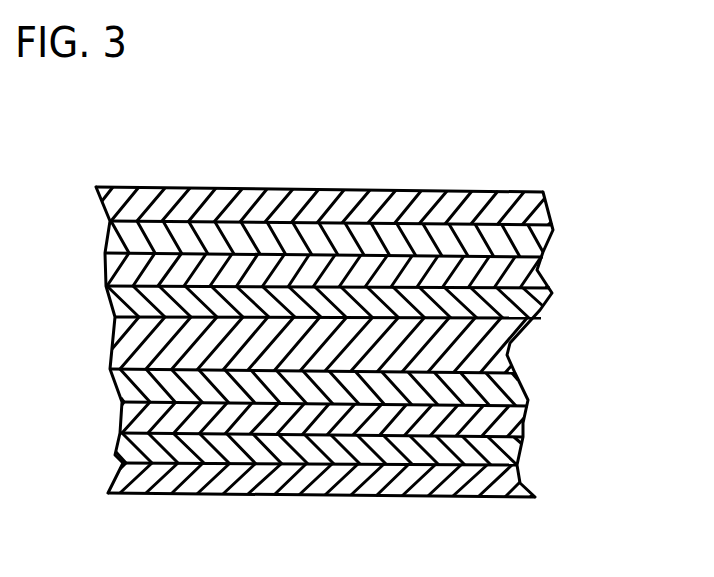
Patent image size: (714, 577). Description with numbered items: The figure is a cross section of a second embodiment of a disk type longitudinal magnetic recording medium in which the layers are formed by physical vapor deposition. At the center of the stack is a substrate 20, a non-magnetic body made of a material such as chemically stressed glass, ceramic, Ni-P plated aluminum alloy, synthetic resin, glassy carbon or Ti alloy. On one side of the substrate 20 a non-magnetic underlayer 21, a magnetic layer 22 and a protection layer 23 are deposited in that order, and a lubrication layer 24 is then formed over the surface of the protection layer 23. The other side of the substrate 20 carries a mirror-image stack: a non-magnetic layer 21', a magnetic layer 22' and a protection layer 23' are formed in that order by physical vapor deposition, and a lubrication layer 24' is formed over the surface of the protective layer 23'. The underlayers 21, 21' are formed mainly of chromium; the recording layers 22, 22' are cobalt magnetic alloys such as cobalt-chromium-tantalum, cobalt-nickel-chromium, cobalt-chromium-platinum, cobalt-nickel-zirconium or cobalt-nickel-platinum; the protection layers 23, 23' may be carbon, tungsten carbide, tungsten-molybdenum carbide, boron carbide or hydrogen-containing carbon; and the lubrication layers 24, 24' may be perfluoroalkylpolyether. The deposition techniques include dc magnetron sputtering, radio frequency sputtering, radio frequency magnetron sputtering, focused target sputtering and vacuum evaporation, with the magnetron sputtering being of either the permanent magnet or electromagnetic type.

The substrate 20 is at (507, 348).
The non-magnetic underlayer 21 is at (380, 293).
The magnetic layer 22 is at (380, 248).
The protection layer 23 is at (368, 202).
The lubrication layer 24 is at (324, 162).
The non-magnetic layer 21' is at (389, 390).
The magnetic layer 22' is at (389, 421).
The protection layer 23' is at (387, 450).
The lubrication layer 24' is at (383, 480).